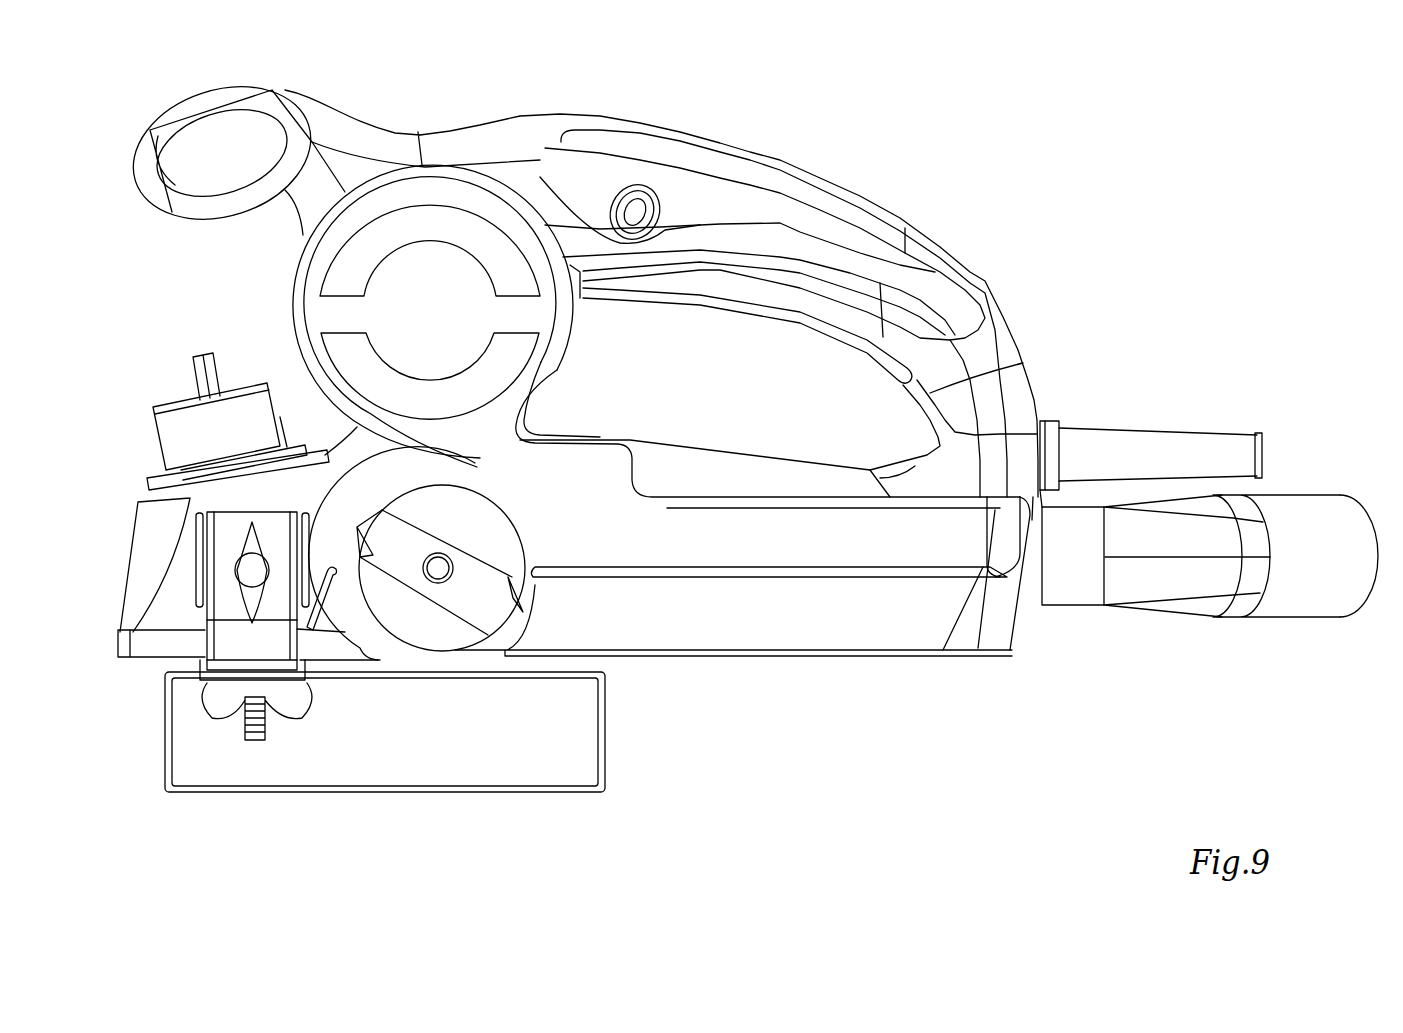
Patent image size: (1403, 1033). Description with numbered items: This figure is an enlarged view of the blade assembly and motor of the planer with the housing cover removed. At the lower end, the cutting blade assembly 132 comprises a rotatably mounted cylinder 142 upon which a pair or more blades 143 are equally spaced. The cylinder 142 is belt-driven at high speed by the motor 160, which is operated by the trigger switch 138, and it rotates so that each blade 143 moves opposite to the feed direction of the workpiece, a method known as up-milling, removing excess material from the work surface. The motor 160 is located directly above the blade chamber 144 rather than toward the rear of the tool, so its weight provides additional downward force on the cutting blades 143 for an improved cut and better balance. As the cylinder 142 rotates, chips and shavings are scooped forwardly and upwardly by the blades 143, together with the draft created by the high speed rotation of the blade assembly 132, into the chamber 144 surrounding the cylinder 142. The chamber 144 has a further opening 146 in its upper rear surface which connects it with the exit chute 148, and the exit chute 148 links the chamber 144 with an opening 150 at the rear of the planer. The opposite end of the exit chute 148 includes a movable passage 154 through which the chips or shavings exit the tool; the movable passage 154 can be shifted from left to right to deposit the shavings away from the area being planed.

The cutting blade assembly 132 is at (397, 653).
The trigger switch 138 is at (797, 322).
The cylinder 142 is at (432, 630).
The blades 143 is at (520, 520).
The chamber 144 is at (357, 610).
The opening 146 is at (522, 603).
The exit chute 148 is at (722, 556).
The opening 150 is at (1020, 557).
The movable passage 154 is at (1137, 590).
The motor 160 is at (390, 298).